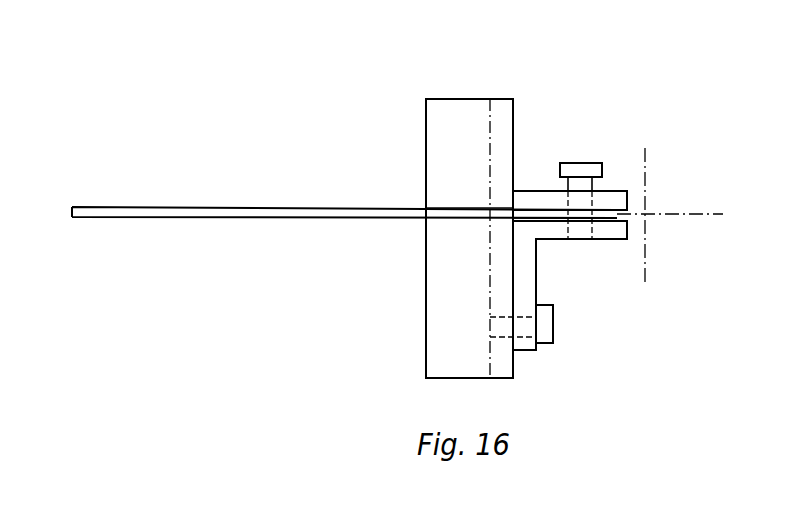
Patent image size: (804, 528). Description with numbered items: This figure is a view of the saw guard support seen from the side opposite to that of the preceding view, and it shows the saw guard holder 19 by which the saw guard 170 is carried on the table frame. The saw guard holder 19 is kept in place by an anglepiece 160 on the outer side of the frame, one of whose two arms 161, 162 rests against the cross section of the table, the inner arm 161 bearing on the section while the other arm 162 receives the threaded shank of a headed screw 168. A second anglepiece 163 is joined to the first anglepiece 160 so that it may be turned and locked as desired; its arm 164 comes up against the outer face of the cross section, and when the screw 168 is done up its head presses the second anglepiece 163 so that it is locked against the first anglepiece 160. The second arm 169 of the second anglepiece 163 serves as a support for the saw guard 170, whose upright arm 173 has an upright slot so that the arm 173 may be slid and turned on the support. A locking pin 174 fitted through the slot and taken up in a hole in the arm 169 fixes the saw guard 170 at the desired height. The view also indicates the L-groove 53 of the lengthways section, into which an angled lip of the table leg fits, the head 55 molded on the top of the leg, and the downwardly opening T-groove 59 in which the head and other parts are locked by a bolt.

The saw guard holder 19 is at (534, 109).
The L-groove 53 is at (690, 214).
The head 55 is at (463, 208).
The T-groove 59 is at (645, 267).
The anglepiece 160 is at (424, 118).
The arm 161 is at (434, 260).
The arm 162 is at (500, 100).
The second anglepiece 163 is at (540, 184).
The arm 164 is at (528, 347).
The screw 168 is at (545, 322).
The second arm 169 is at (610, 231).
The saw guard 170 is at (232, 208).
The upright arm 173 is at (543, 213).
The locking pin 174 is at (590, 168).